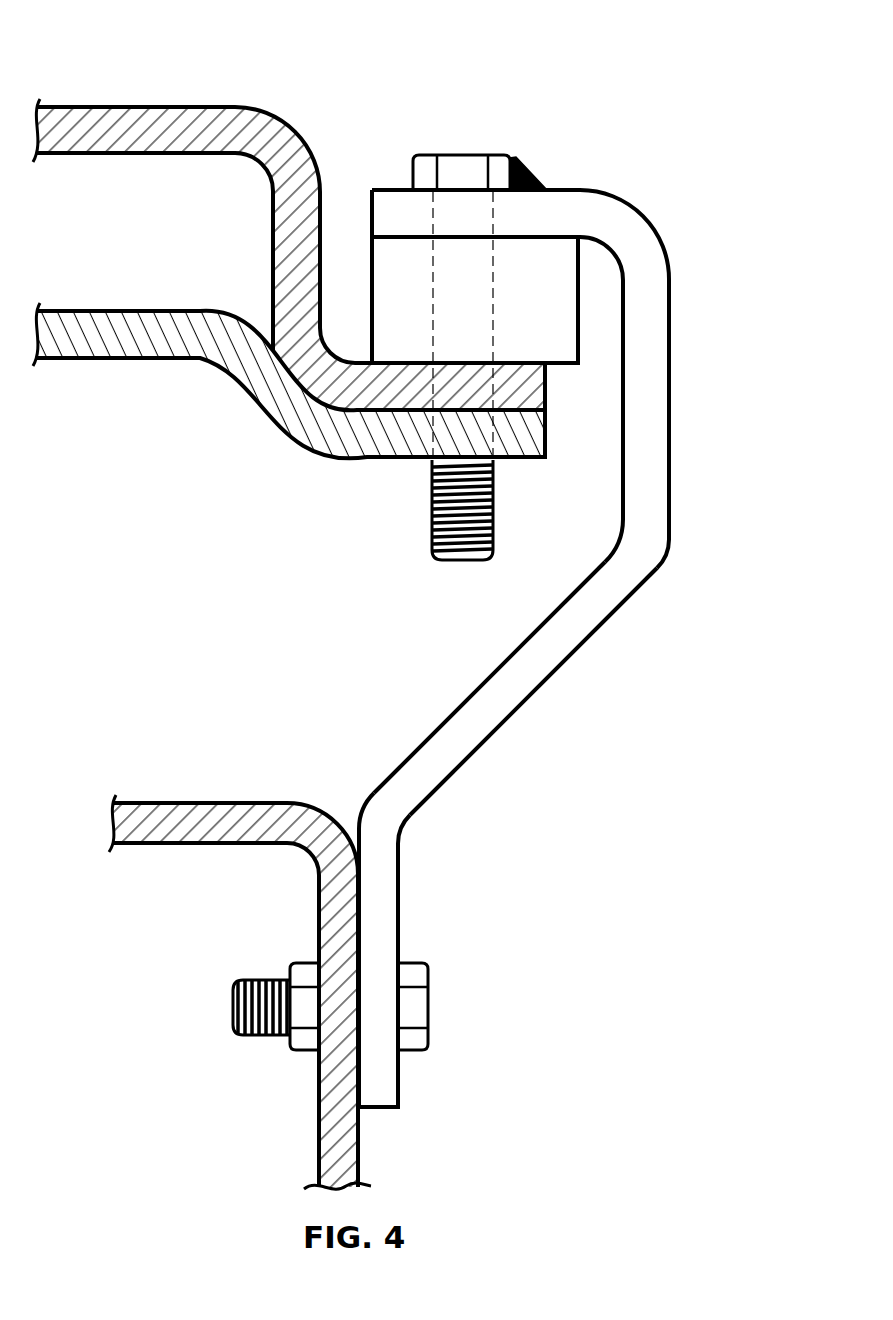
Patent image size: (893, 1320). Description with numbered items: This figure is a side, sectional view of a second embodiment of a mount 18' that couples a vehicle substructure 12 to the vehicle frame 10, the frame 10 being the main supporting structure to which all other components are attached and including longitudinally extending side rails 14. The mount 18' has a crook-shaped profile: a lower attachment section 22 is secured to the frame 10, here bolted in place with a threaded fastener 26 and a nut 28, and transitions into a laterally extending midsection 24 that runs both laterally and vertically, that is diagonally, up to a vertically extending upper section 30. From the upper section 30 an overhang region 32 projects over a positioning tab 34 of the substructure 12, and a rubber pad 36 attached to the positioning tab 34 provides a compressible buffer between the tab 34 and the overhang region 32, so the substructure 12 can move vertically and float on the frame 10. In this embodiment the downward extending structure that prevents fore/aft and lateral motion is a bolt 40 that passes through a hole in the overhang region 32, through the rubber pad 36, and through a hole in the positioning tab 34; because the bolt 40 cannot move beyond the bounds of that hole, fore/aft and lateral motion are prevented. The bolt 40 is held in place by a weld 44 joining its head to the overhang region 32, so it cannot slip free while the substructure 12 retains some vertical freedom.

The frame 10 is at (180, 802).
The substructure 12 is at (104, 107).
The side rail 14 is at (334, 908).
The mount 18' is at (319, 37).
The lower attachment section 22 is at (399, 918).
The laterally extending midsection 24 is at (522, 707).
The threaded fastener 26 is at (430, 1020).
The nut 28 is at (290, 965).
The vertically extending upper section 30 is at (669, 343).
The overhang region 32 is at (566, 190).
The positioning tab 34 is at (522, 389).
The rubber pad 36 is at (580, 288).
The bolt 40 is at (423, 155).
The weld 44 is at (528, 172).